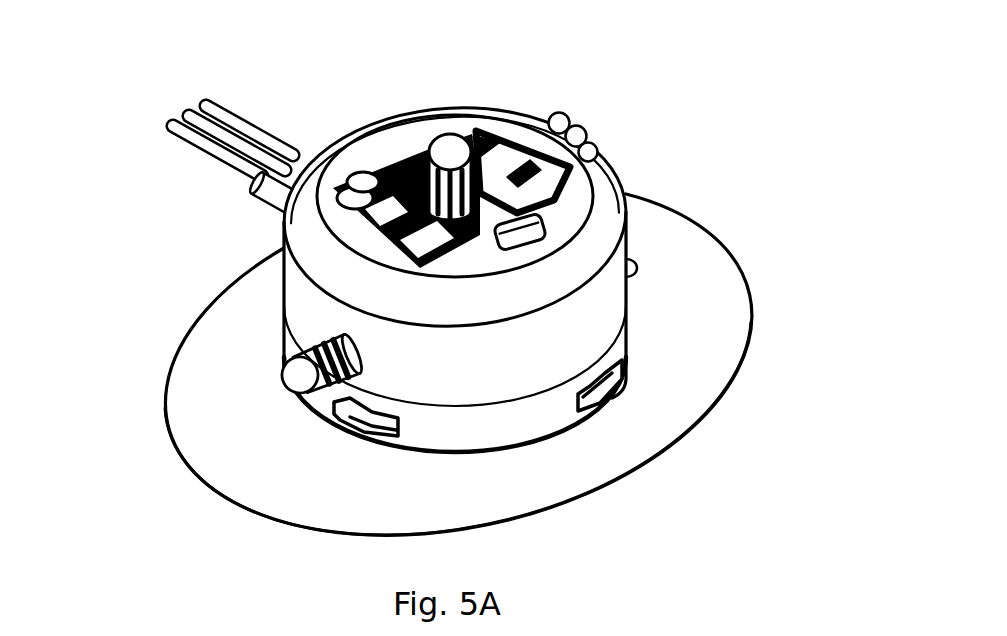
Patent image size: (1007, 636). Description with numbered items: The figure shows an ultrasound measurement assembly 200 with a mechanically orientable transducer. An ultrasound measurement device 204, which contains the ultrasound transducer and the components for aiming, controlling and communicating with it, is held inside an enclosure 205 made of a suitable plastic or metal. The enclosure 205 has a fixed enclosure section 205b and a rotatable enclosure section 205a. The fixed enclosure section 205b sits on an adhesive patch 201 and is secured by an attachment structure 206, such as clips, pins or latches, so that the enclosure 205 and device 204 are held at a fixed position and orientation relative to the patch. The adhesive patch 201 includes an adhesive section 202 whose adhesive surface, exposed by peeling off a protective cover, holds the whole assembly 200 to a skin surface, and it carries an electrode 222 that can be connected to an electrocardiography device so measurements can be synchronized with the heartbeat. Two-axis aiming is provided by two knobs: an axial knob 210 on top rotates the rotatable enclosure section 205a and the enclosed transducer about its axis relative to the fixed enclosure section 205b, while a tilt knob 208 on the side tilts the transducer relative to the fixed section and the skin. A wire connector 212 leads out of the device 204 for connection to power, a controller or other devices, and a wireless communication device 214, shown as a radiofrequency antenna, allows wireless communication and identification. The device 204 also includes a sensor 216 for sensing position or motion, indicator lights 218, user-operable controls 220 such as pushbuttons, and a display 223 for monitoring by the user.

The ultrasound measurement assembly 200 is at (779, 117).
The adhesive patch 201 is at (140, 401).
The adhesive section 202 is at (207, 370).
The ultrasound measurement device 204 is at (210, 262).
The enclosure 205 is at (666, 326).
The rotatable enclosure section 205a is at (490, 383).
The fixed enclosure section 205b is at (427, 430).
The attachment structure 206 is at (605, 410).
The tilt knob 208 is at (287, 386).
The axial knob 210 is at (432, 140).
The wire connector 212 is at (257, 193).
The wireless communication device 214 is at (495, 117).
The sensor 216 is at (545, 221).
The indicator lights 218 is at (588, 128).
The user-operable controls 220 is at (343, 174).
The electrode 222 is at (637, 267).
The display 223 is at (452, 255).